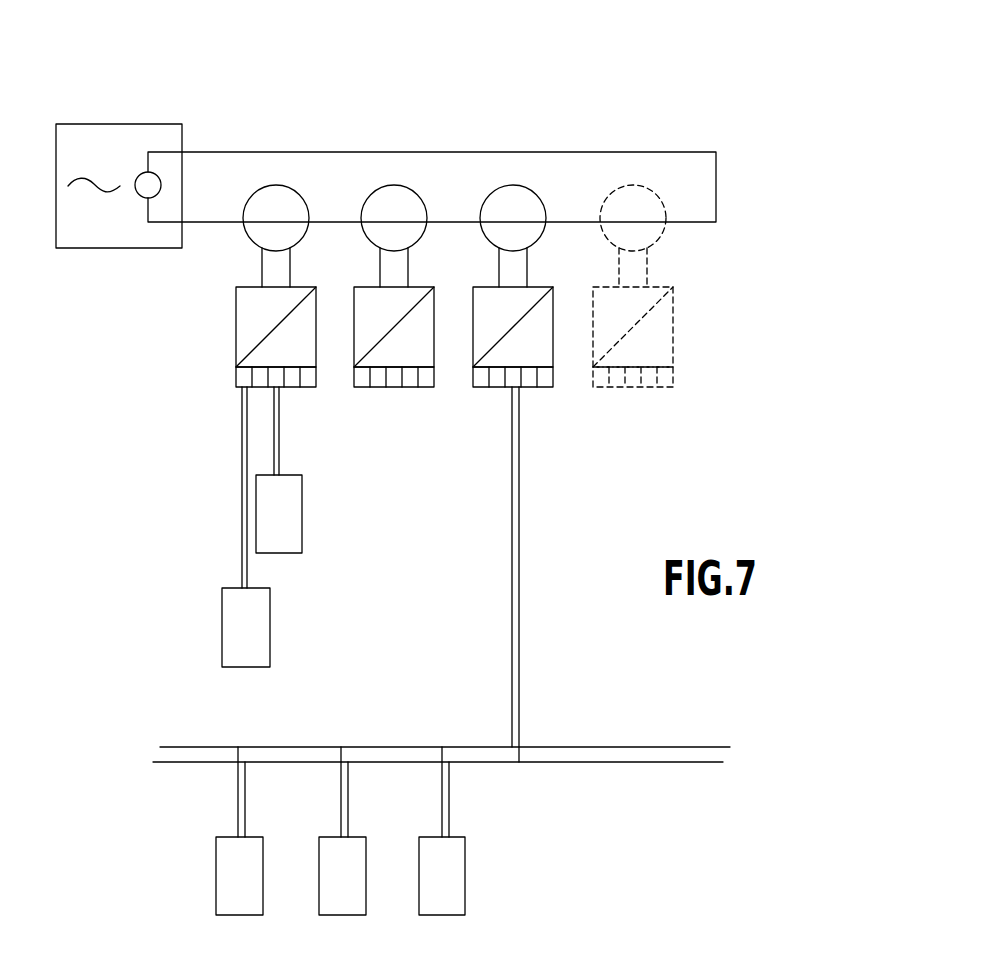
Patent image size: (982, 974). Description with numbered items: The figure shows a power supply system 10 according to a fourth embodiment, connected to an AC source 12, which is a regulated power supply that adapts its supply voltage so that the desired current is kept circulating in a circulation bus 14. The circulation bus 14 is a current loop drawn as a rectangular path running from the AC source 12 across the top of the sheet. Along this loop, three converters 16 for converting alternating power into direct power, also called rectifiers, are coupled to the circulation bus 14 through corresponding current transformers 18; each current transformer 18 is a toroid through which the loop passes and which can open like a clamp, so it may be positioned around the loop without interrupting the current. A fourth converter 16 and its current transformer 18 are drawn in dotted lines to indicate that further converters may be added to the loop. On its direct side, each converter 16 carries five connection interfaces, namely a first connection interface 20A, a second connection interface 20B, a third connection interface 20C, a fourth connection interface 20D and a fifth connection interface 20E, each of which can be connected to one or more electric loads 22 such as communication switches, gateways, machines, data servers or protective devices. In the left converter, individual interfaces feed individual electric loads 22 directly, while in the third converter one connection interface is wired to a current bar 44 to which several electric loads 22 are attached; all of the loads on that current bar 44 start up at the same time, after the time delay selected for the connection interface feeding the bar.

The power supply system 10 is at (513, 98).
The AC source 12 is at (118, 124).
The circulation bus 14 is at (716, 193).
The converter for converting alternating power into direct power 16 is at (236, 330).
The current transformer 18 is at (289, 191).
The first connection interface 20A is at (236, 381).
The second connection interface 20B is at (496, 387).
The third connection interface 20C is at (510, 387).
The fourth connection interface 20D is at (287, 387).
The fifth connection interface 20E is at (310, 387).
The electric load 22 is at (340, 695).
The current bar 44 is at (612, 762).